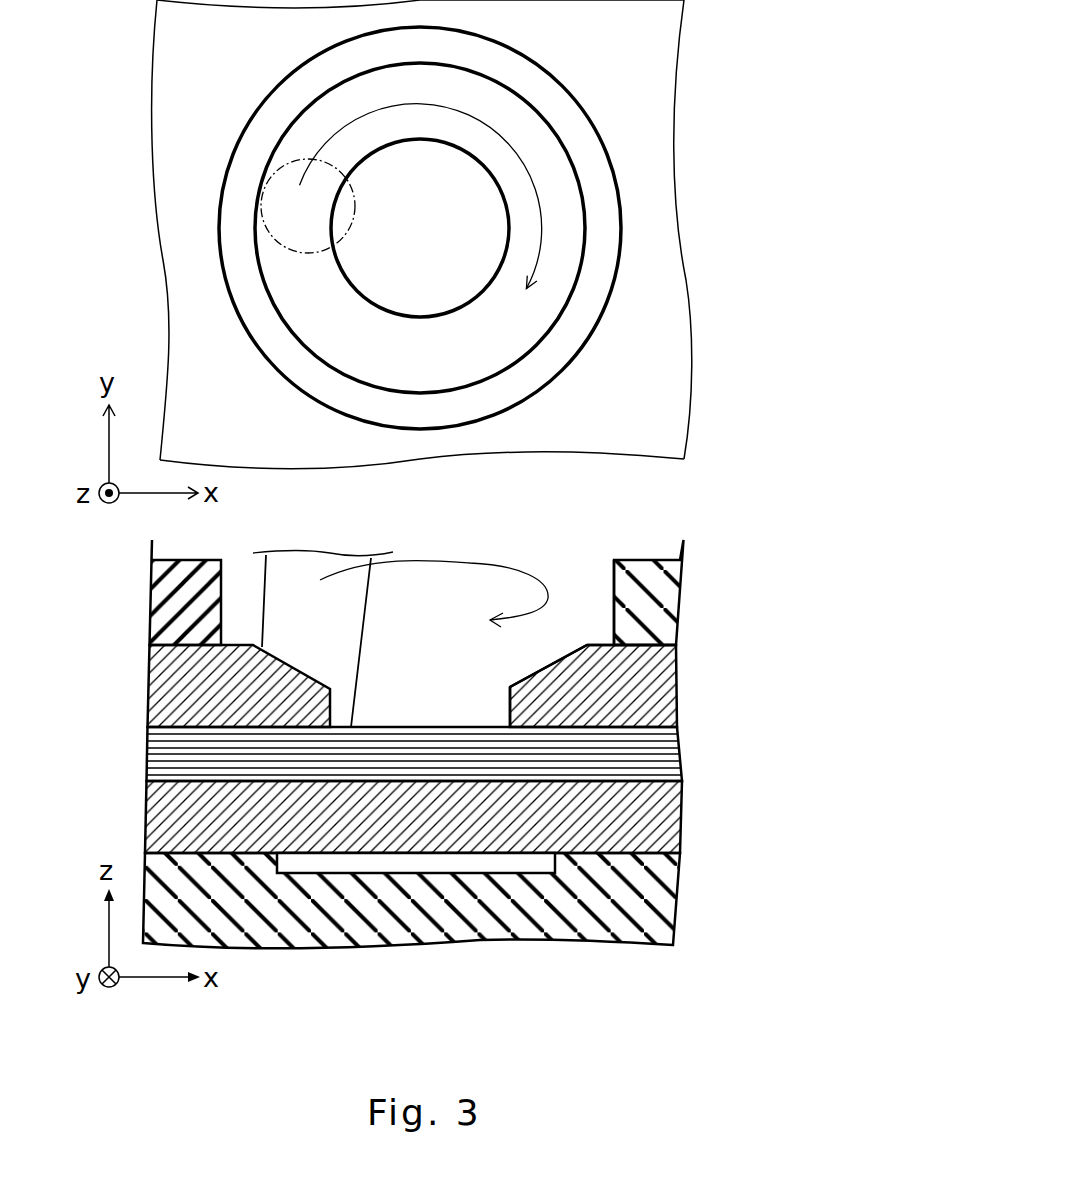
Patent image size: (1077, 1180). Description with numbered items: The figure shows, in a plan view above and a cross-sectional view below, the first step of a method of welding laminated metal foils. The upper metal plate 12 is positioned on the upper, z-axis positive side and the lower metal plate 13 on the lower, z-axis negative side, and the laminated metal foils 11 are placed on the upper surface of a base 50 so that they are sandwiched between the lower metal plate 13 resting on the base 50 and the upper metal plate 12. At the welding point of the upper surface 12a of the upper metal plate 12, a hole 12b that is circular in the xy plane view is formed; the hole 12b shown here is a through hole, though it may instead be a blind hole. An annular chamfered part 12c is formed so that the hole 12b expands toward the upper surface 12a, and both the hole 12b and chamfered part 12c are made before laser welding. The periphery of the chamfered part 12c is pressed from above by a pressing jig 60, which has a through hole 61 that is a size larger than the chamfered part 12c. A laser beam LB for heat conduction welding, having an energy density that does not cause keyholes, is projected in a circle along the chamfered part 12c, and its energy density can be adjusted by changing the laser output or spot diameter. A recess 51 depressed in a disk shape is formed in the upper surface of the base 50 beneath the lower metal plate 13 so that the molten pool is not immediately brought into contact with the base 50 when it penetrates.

The pressing jig 60 is at (673, 38).
The through hole 61 is at (613, 578).
The laminated metal foils 11 is at (437, 252).
The upper metal plate 12 is at (757, 312).
The upper surface 12a is at (608, 284).
The hole 12b is at (452, 308).
The chamfered part 12c is at (556, 298).
The lower metal plate 13 is at (680, 818).
The base 50 is at (670, 910).
The recess 51 is at (278, 862).
The laser beam LB is at (266, 168).